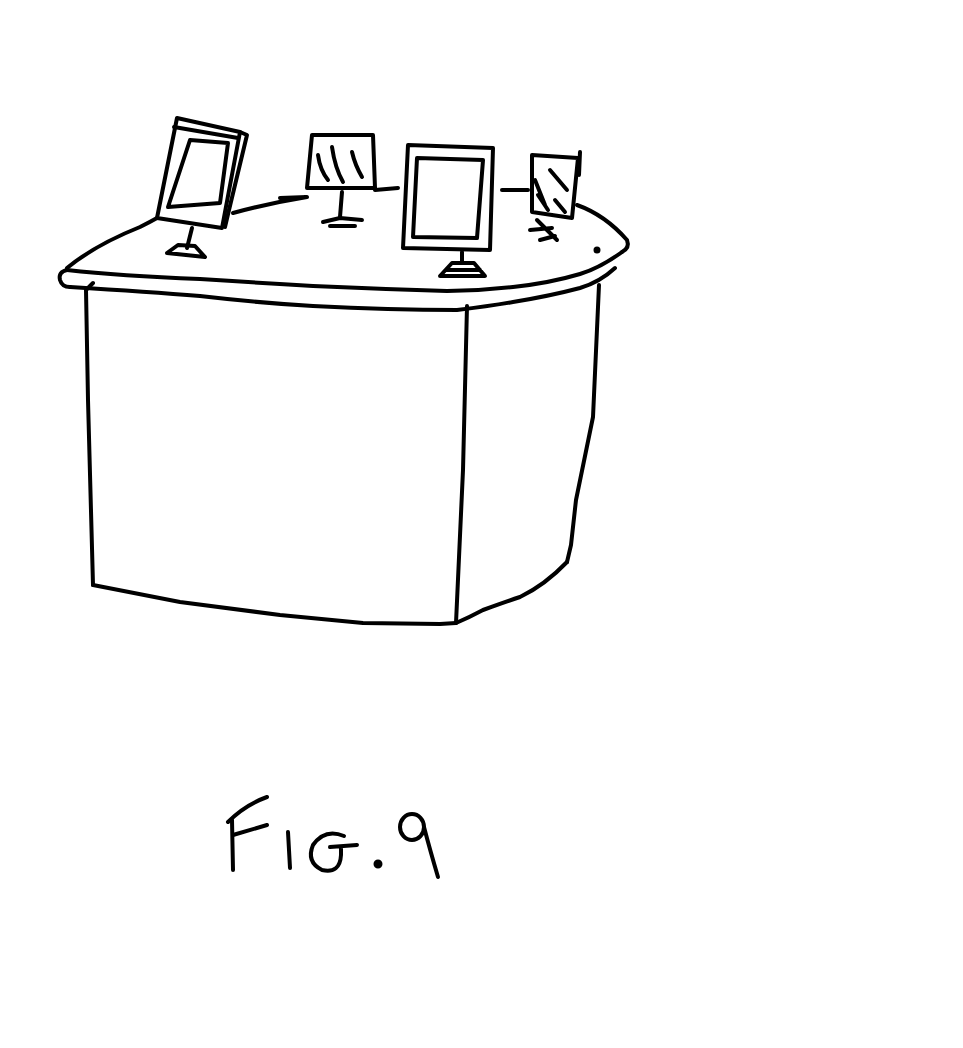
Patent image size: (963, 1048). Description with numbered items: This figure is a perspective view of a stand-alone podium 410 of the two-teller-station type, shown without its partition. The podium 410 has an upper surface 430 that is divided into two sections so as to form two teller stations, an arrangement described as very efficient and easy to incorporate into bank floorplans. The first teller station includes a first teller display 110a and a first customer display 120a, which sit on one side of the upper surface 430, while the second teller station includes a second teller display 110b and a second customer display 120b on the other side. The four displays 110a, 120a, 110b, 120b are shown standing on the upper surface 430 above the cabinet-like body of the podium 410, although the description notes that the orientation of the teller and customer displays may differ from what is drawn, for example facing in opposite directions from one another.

The first teller display 110a is at (174, 133).
The second teller display 110b is at (472, 148).
The first customer display 120a is at (348, 128).
The second customer display 120b is at (563, 157).
The stand-alone podium 410 is at (665, 405).
The upper surface 430 is at (593, 254).